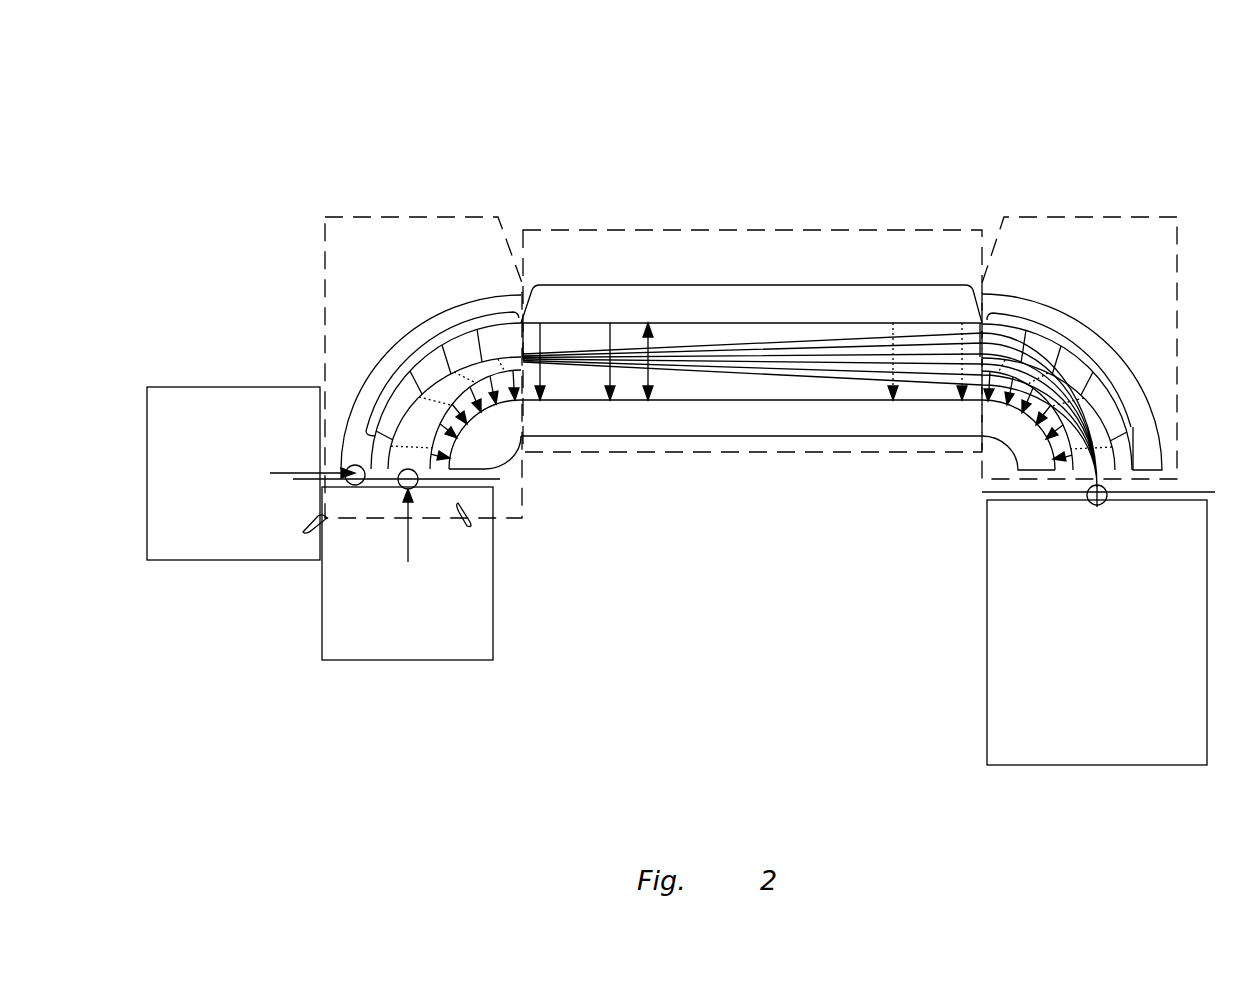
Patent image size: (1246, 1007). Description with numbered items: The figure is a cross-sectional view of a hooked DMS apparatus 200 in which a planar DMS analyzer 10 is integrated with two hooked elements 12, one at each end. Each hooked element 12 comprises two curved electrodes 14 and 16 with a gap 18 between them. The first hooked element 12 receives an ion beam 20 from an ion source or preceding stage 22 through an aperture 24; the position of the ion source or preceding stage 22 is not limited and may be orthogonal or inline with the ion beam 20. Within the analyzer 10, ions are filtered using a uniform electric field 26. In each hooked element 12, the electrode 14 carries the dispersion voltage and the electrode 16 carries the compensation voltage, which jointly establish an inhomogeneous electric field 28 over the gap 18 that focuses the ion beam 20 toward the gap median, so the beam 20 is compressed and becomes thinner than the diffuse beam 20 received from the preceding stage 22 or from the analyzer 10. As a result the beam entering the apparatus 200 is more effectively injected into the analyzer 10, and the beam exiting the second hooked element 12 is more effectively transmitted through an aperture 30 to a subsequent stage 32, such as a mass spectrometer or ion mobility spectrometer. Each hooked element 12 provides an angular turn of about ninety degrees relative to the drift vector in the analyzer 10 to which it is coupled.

The hooked DMS apparatus 200 is at (1082, 112).
The planar DMS analyzer 10 is at (602, 228).
The hooked element 12 is at (397, 217).
The curved electrode 14 is at (497, 432).
The curved electrode 16 is at (495, 300).
The gap 18 is at (652, 378).
The ion beam 20 is at (882, 374).
The ion source or preceding stage 22 is at (200, 427).
The aperture 24 is at (353, 477).
The uniform electric field 26 is at (748, 285).
The inhomogeneous electric field 28 is at (413, 345).
The aperture 30 is at (1107, 493).
The subsequent stage 32 is at (1119, 648).